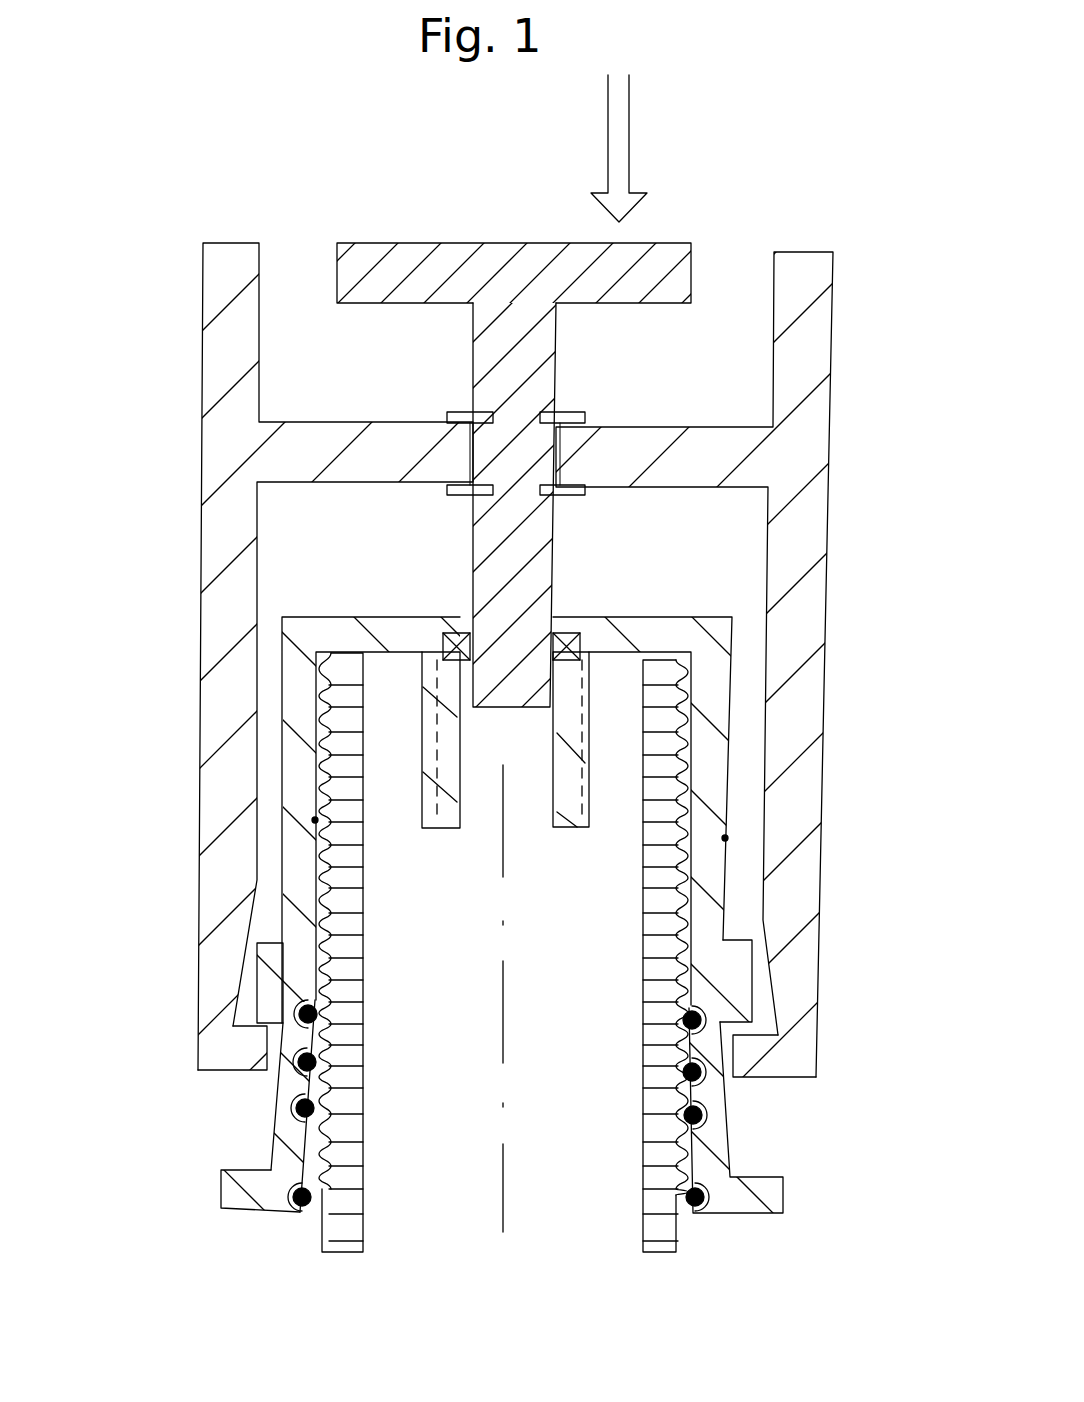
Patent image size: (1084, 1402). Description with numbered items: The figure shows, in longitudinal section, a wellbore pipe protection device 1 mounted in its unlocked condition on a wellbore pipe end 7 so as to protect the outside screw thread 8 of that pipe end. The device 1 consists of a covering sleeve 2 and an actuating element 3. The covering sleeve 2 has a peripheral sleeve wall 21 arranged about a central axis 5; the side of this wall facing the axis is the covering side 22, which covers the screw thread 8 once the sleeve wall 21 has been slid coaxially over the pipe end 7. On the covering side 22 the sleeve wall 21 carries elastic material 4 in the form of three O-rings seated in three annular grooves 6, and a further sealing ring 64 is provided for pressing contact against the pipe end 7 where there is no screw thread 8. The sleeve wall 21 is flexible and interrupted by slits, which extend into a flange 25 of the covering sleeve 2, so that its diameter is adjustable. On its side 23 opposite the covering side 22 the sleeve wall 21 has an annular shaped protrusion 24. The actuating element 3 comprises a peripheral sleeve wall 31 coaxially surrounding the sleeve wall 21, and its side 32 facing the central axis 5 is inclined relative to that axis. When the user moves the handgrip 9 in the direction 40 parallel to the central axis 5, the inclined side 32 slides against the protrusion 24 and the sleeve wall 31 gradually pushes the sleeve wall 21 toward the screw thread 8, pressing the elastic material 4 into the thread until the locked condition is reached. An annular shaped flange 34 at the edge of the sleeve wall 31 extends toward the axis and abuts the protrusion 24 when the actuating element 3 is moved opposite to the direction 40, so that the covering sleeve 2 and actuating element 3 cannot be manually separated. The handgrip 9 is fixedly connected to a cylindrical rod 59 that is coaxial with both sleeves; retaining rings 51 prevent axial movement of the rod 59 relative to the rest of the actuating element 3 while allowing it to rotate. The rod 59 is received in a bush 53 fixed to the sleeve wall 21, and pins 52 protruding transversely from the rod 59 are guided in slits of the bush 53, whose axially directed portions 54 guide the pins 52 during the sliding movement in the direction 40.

The wellbore pipe protection device 1 is at (112, 102).
The covering sleeve 2 is at (263, 1232).
The actuating element 3 is at (170, 261).
The elastic material 4 is at (318, 1015).
The central axis 5 is at (503, 1232).
The annular grooves 6 is at (703, 1016).
The wellbore pipe end 7 is at (338, 1262).
The outside screw thread 8 is at (325, 878).
The handgrip 9 is at (453, 245).
The peripheral sleeve wall 21 is at (300, 778).
The covering side 22 is at (313, 820).
The side opposite the covering side 23 is at (727, 838).
The annular shaped protrusion 24 is at (735, 960).
The flange 25 is at (240, 1191).
The peripheral sleeve wall of the actuating element 31 is at (225, 614).
The inclined side 32 is at (245, 970).
The annular shaped flange 34 is at (245, 1054).
The direction 40 is at (621, 132).
The retaining rings 51 is at (457, 412).
The pins 52 is at (450, 633).
The bush 53 is at (441, 832).
The axially directed portions 54 is at (448, 729).
The cylindrical rod 59 is at (512, 630).
The sealing ring 64 is at (320, 1196).